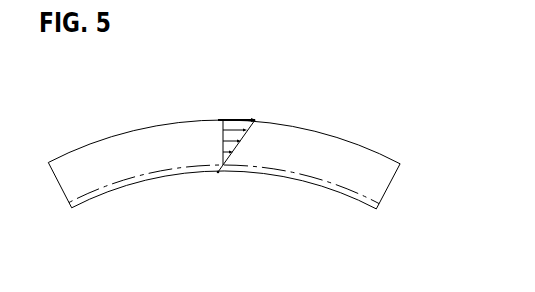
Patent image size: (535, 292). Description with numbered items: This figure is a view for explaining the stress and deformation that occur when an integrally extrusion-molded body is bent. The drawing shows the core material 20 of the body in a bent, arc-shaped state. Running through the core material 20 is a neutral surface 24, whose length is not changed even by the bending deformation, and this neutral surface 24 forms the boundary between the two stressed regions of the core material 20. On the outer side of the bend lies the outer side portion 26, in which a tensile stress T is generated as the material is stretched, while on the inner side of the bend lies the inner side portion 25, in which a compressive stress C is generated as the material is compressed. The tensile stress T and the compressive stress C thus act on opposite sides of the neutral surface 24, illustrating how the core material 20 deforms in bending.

The core material 20 is at (258, 165).
The neutral surface 24 is at (373, 197).
The inner side portion 25 is at (275, 176).
The outer side portion 26 is at (280, 124).
The tensile stress T is at (233, 120).
The compressive stress C is at (218, 172).